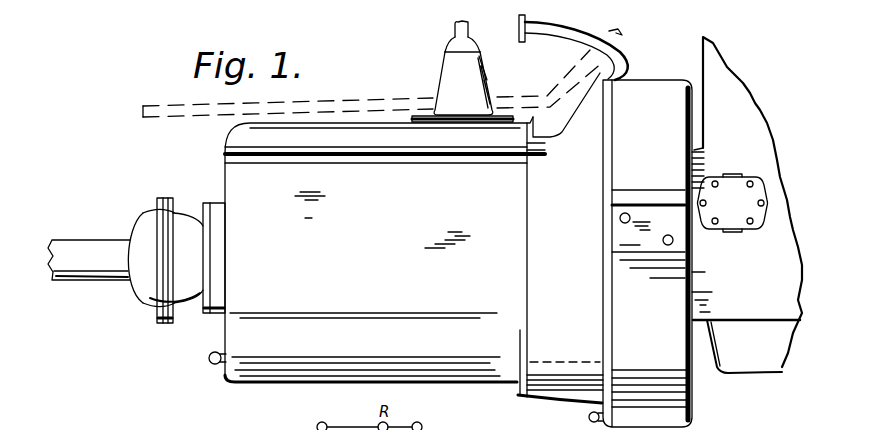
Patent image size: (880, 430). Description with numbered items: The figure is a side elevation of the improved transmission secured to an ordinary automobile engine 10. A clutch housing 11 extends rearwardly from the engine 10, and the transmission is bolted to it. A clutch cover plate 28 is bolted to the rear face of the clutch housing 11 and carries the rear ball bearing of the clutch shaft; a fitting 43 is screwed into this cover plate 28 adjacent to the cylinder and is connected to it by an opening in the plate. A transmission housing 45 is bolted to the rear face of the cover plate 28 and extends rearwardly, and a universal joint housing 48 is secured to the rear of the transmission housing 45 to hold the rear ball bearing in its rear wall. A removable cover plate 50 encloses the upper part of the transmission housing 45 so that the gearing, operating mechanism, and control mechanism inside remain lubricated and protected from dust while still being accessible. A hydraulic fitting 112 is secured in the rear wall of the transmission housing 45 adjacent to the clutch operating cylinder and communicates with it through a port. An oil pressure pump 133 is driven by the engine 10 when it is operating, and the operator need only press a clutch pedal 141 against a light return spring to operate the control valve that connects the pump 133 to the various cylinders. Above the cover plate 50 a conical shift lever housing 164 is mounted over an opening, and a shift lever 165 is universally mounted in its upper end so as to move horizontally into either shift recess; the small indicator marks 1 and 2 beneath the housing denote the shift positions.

The engine 10 is at (747, 205).
The clutch housing 11 is at (647, 253).
The clutch cover plate 28 is at (560, 238).
The fitting 43 is at (588, 417).
The transmission housing 45 is at (385, 257).
The universal joint housing 48 is at (132, 323).
The removable cover plate 50 is at (385, 139).
The hydraulic fitting 112 is at (208, 360).
The oil pressure pump 133 is at (733, 203).
The clutch pedal 141 is at (612, 50).
The conical shift lever housing 164 is at (462, 87).
The shift lever 165 is at (455, 30).
The position indicator 1 is at (411, 424).
The position indicator 2 is at (337, 424).